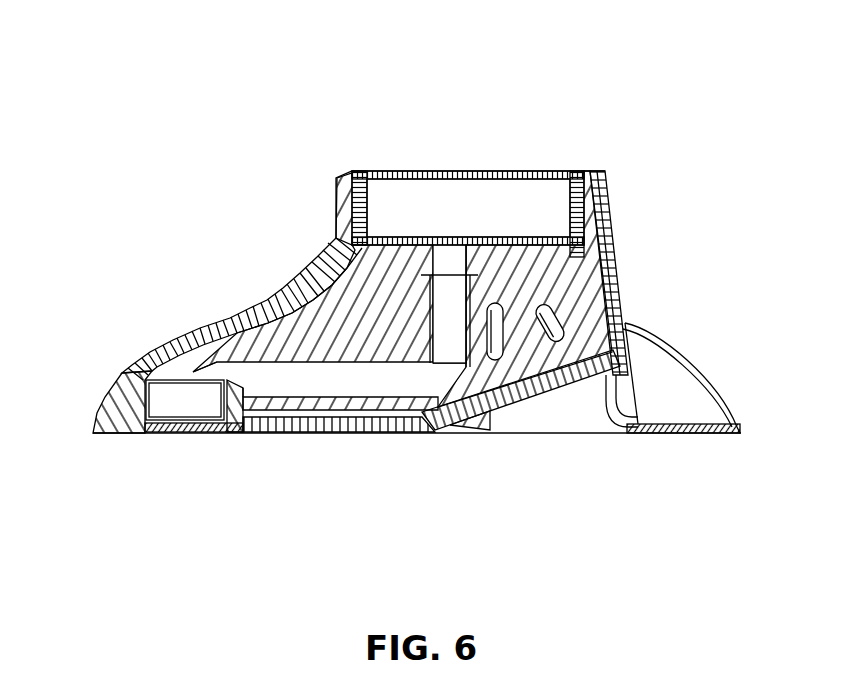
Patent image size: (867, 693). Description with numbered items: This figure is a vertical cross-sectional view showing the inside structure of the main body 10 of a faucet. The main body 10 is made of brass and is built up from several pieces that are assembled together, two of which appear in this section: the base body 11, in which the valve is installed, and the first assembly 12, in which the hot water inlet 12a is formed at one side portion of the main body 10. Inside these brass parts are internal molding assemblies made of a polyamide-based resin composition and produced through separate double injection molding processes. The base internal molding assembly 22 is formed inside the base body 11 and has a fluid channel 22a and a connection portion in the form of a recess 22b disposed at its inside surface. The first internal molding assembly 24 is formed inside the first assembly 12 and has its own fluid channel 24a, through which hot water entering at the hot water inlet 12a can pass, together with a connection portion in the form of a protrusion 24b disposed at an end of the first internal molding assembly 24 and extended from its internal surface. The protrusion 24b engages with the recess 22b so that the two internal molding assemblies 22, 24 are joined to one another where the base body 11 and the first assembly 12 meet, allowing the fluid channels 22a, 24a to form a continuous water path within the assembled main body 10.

The main body 10 is at (208, 73).
The base body 11 is at (607, 217).
The first assembly 12 is at (153, 350).
The hot water inlet 12a is at (180, 432).
The base internal molding assembly 22 is at (575, 292).
The fluid channel 22a is at (340, 300).
The recess 22b is at (300, 337).
The first internal molding assembly 24 is at (253, 327).
The fluid channel 24a is at (262, 377).
The protrusion 24b is at (303, 398).